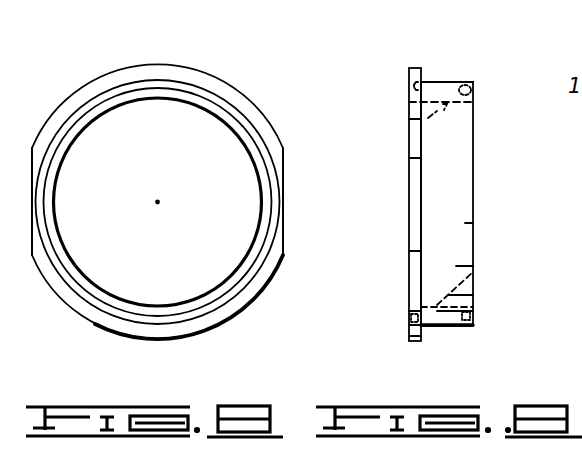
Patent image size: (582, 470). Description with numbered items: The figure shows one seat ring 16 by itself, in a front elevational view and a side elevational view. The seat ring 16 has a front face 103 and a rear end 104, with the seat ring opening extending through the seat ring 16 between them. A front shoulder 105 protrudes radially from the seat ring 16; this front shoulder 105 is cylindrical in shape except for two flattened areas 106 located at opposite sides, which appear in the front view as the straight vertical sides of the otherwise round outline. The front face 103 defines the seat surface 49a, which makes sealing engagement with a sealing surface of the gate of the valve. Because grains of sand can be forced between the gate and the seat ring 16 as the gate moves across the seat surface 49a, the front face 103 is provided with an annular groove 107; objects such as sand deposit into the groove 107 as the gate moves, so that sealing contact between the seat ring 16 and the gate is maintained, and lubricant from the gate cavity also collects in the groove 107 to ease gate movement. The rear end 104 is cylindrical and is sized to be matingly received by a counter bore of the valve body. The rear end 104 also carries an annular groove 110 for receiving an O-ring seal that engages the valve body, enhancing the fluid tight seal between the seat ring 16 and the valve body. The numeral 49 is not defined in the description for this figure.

In FIG. 8, the seat ring 16 is at (257, 90).
In FIG. 9, the seat ring 16 is at (474, 72).
In FIG. 8, the sealing ring 49 is at (133, 234).
In FIG. 9, the sealing ring 49 is at (408, 122).
In FIG. 8, the seat surface 49a is at (222, 313).
In FIG. 9, the seat surface 49a is at (408, 290).
In FIG. 8, the front face 103 is at (113, 82).
In FIG. 9, the front face 103 is at (408, 93).
In FIG. 9, the rear end 104 is at (474, 156).
In FIG. 9, the front shoulder 105 is at (414, 68).
In FIG. 8, the flattened areas 106 is at (32, 173).
In FIG. 9, the flattened areas 106 is at (415, 222).
In FIG. 8, the annular groove 107 is at (168, 83).
In FIG. 9, the annular groove 107 is at (408, 80).
In FIG. 9, the annular groove 110 is at (475, 90).